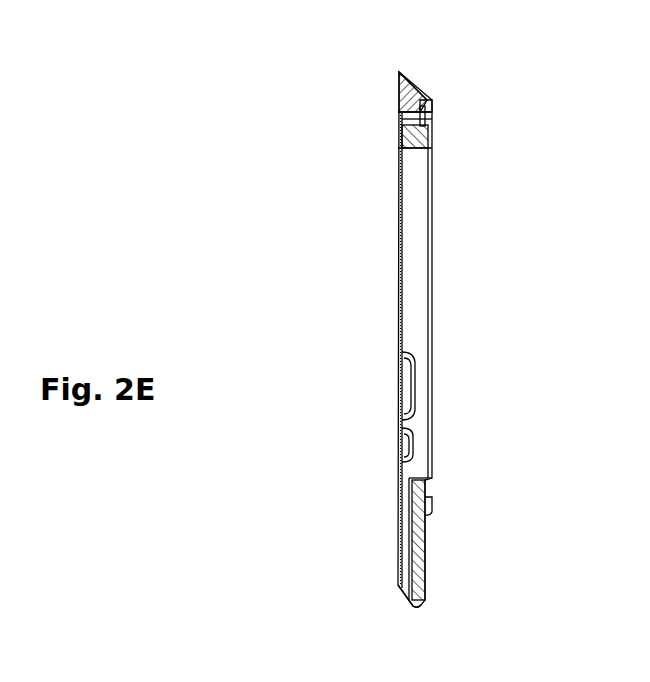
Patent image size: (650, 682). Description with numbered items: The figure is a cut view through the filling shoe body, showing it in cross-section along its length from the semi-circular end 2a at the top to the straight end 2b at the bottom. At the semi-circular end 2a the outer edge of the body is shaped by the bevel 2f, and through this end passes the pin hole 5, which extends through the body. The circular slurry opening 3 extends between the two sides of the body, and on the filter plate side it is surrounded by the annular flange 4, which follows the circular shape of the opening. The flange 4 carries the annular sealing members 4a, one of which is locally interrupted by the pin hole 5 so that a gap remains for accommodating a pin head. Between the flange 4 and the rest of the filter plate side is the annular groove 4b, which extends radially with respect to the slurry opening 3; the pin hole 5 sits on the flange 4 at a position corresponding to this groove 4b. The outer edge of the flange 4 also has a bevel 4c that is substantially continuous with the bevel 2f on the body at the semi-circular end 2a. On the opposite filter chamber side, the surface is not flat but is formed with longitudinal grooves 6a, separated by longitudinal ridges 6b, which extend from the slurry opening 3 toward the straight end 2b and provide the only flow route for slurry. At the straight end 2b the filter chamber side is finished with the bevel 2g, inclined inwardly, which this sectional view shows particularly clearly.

The semi-circular end 2a is at (399, 70).
The bevel 2f is at (406, 78).
The bevel 2g is at (412, 601).
The straight end 2b is at (420, 605).
The slurry opening 3 is at (432, 311).
The annular flange 4 is at (433, 145).
The annular sealing member 4a is at (432, 488).
The annular groove 4b is at (426, 101).
The bevel 4c is at (431, 517).
The pin hole 5 is at (435, 119).
The longitudinal groove 6a is at (398, 392).
The longitudinal ridge 6b is at (398, 428).